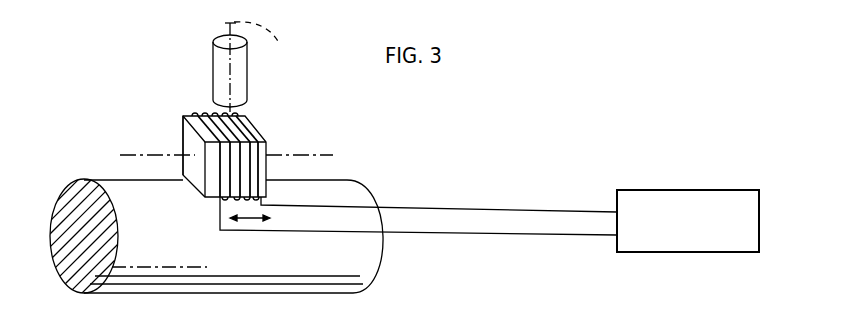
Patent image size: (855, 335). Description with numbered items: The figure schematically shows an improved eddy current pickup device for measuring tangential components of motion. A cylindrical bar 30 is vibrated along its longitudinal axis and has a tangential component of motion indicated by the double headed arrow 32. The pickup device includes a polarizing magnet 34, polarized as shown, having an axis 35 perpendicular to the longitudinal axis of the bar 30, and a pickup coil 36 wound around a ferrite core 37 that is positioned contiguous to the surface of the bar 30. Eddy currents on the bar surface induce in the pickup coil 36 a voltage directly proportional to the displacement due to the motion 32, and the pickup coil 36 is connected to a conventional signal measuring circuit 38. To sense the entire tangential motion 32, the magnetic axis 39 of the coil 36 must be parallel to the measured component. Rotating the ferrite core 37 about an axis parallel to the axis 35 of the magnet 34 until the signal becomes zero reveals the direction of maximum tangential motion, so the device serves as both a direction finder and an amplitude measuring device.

The cylindrical bar 30 is at (358, 255).
The double headed arrow 32 is at (250, 219).
The polarizing magnet 34 is at (220, 70).
The axis of polarizing magnet 35 is at (265, 42).
The pickup coil 36 is at (207, 177).
The ferrite core 37 is at (188, 135).
The signal measuring circuit 38 is at (672, 253).
The magnetic axis of coil 39 is at (282, 155).